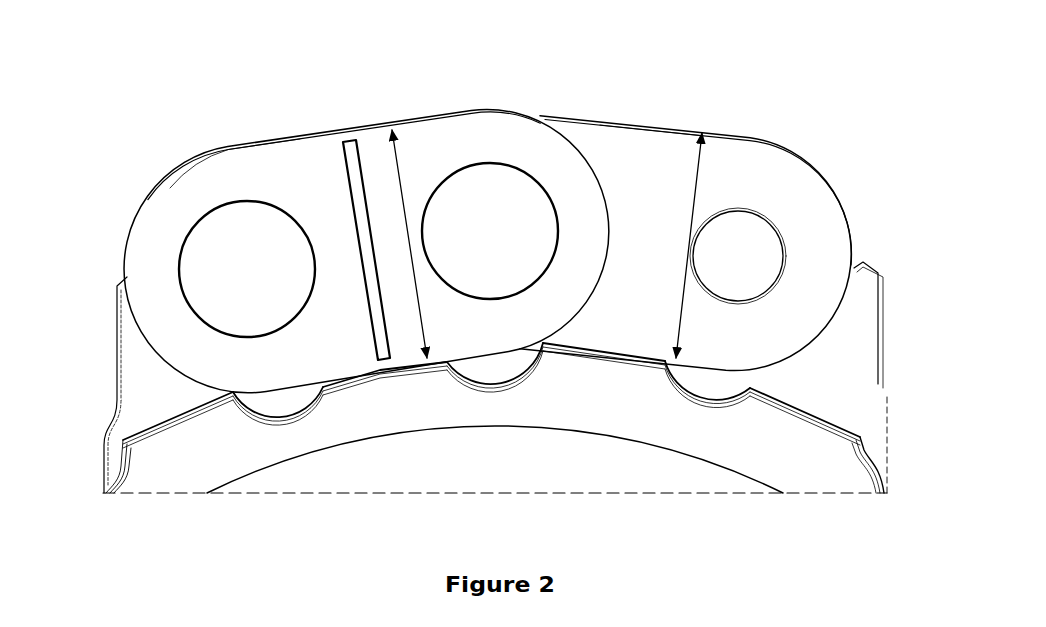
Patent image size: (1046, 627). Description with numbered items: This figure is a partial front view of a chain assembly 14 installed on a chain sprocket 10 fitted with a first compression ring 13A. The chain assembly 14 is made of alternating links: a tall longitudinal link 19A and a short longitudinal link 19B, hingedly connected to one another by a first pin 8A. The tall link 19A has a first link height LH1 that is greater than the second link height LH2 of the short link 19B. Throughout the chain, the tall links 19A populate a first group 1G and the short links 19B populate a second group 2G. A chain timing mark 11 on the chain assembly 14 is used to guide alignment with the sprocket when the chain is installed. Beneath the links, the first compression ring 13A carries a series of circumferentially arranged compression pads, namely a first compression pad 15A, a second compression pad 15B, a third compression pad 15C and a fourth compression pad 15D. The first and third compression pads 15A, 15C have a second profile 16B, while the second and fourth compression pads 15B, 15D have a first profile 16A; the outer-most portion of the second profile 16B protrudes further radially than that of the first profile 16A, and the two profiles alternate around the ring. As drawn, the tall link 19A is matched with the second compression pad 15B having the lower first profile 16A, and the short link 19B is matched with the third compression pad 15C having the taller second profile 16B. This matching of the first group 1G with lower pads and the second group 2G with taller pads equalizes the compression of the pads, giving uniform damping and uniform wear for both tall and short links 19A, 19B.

The first group 1G is at (143, 208).
The second group 2G is at (750, 138).
The first pin 8A is at (489, 172).
The chain sprocket 10 is at (111, 320).
The chain timing mark 11 is at (349, 140).
The first compression ring 13A is at (866, 428).
The chain assembly 14 is at (268, 130).
The first compression pad 15A is at (187, 431).
The second compression pad 15B is at (398, 386).
The third compression pad 15C is at (615, 370).
The fourth compression pad 15D is at (795, 433).
The first profile 16A is at (351, 386).
The second profile 16B is at (160, 428).
The tall longitudinal link 19A is at (208, 167).
The short longitudinal link 19B is at (662, 147).
The first link height LH1 is at (393, 128).
The second link height LH2 is at (703, 132).